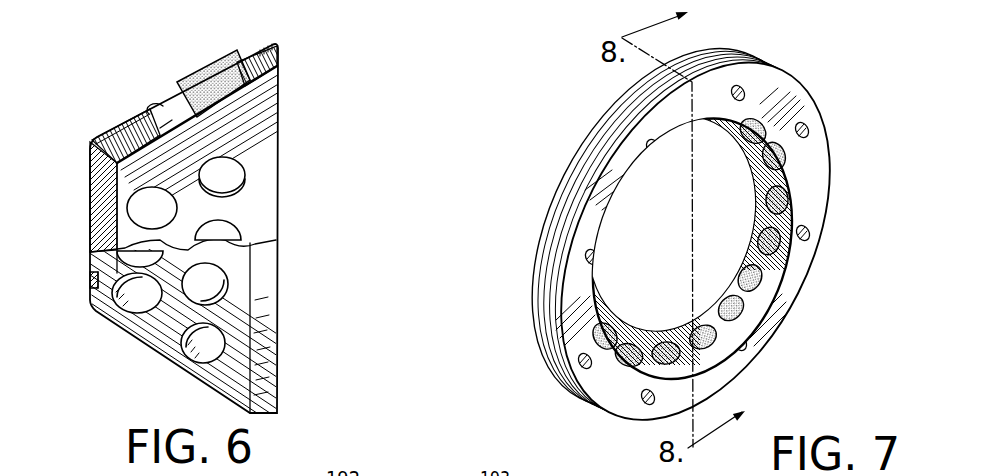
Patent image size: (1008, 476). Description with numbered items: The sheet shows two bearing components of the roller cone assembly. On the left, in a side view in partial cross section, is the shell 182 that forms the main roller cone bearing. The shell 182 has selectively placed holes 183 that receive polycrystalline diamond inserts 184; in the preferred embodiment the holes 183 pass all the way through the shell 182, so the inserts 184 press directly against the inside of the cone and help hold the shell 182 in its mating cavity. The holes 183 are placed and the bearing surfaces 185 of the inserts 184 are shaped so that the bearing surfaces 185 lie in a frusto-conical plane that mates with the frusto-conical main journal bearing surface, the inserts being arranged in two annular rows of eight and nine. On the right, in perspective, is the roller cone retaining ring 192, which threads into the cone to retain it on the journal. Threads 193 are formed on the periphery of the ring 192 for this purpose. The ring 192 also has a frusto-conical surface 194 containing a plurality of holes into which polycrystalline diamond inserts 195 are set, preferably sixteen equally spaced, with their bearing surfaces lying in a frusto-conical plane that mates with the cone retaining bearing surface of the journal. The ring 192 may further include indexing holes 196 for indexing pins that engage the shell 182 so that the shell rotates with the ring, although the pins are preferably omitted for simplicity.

In FIG. 6, the shell 182 is at (111, 108).
In FIG. 6, the holes 183 is at (147, 101).
In FIG. 6, the polycrystalline diamond inserts 184 is at (208, 54).
In FIG. 6, the bearing surfaces 185 is at (253, 92).
In FIG. 7, the roller cone retaining ring 192 is at (568, 152).
In FIG. 7, the threads 193 is at (546, 298).
In FIG. 7, the frusto-conical surface 194 is at (790, 173).
In FIG. 7, the polycrystalline diamond inserts 195 is at (787, 197).
In FIG. 7, the indexing holes 196 is at (810, 130).